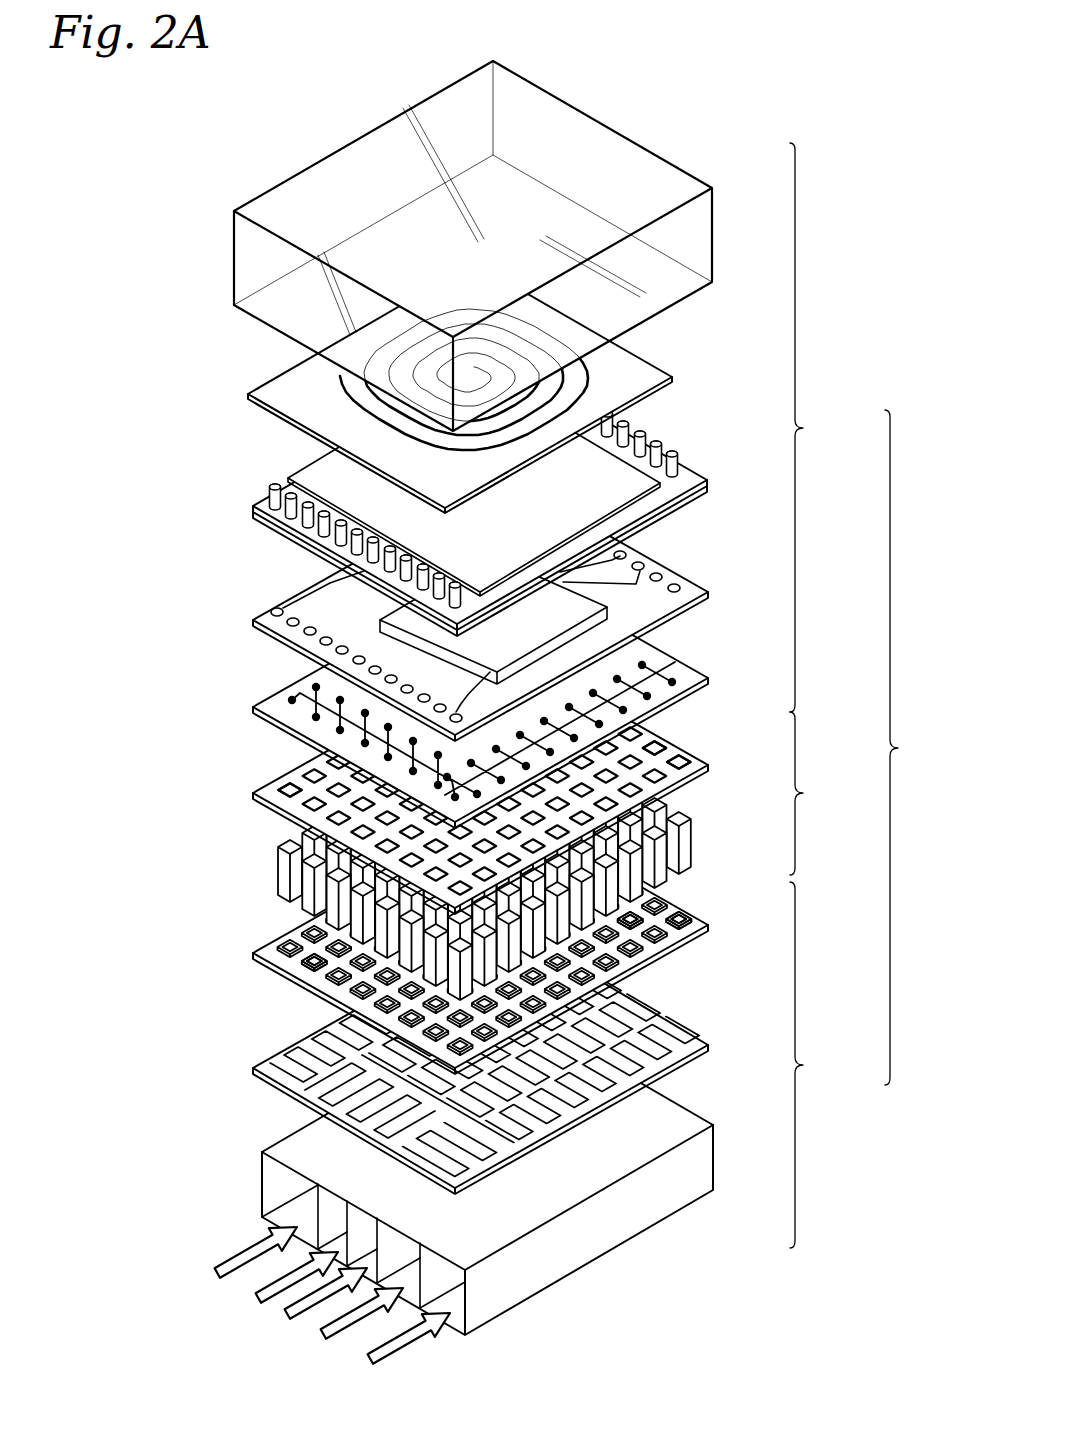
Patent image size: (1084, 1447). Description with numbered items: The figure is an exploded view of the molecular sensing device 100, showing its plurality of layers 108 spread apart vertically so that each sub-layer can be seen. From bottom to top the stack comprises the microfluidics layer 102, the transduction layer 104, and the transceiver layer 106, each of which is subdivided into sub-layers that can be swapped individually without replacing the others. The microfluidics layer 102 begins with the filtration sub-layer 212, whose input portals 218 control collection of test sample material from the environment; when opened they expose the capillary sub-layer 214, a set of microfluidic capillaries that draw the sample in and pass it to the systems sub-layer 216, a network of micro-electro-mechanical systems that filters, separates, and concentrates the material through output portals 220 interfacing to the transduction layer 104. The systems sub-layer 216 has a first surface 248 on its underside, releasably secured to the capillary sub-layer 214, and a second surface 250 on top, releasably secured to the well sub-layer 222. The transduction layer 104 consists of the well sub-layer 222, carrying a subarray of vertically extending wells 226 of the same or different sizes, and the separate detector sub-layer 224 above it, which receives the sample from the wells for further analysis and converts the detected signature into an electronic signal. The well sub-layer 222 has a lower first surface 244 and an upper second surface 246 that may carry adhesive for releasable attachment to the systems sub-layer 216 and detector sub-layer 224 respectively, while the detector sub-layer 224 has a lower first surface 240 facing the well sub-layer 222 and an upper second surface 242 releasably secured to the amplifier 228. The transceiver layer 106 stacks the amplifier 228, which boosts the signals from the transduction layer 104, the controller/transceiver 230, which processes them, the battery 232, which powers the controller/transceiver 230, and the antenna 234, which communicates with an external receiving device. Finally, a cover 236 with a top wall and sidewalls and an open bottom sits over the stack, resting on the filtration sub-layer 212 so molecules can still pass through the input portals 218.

The molecular sensing device 100 is at (752, 97).
The microfluidics layer 102 is at (828, 1065).
The transduction layer 104 is at (828, 793).
The transceiver layer 106 is at (828, 427).
The plurality of layers 108 is at (922, 747).
The filtration sub-layer 212 is at (262, 1148).
The capillary sub-layer 214 is at (258, 1063).
The systems sub-layer 216 is at (483, 942).
The input portals 218 is at (365, 1358).
The output portals 220 is at (636, 915).
The well sub-layer 222 is at (462, 857).
The detector sub-layer 224 is at (484, 782).
The wells 226 is at (660, 864).
The amplifier 228 is at (262, 706).
The controller/transceiver 230 is at (262, 612).
The battery 232 is at (262, 500).
The antenna 234 is at (258, 393).
The cover 236 is at (256, 201).
The first surface 240 is at (683, 785).
The second surface 242 is at (292, 786).
The first surface 244 is at (282, 903).
The second surface 246 is at (306, 855).
The first surface 248 is at (300, 985).
The second surface 250 is at (684, 920).